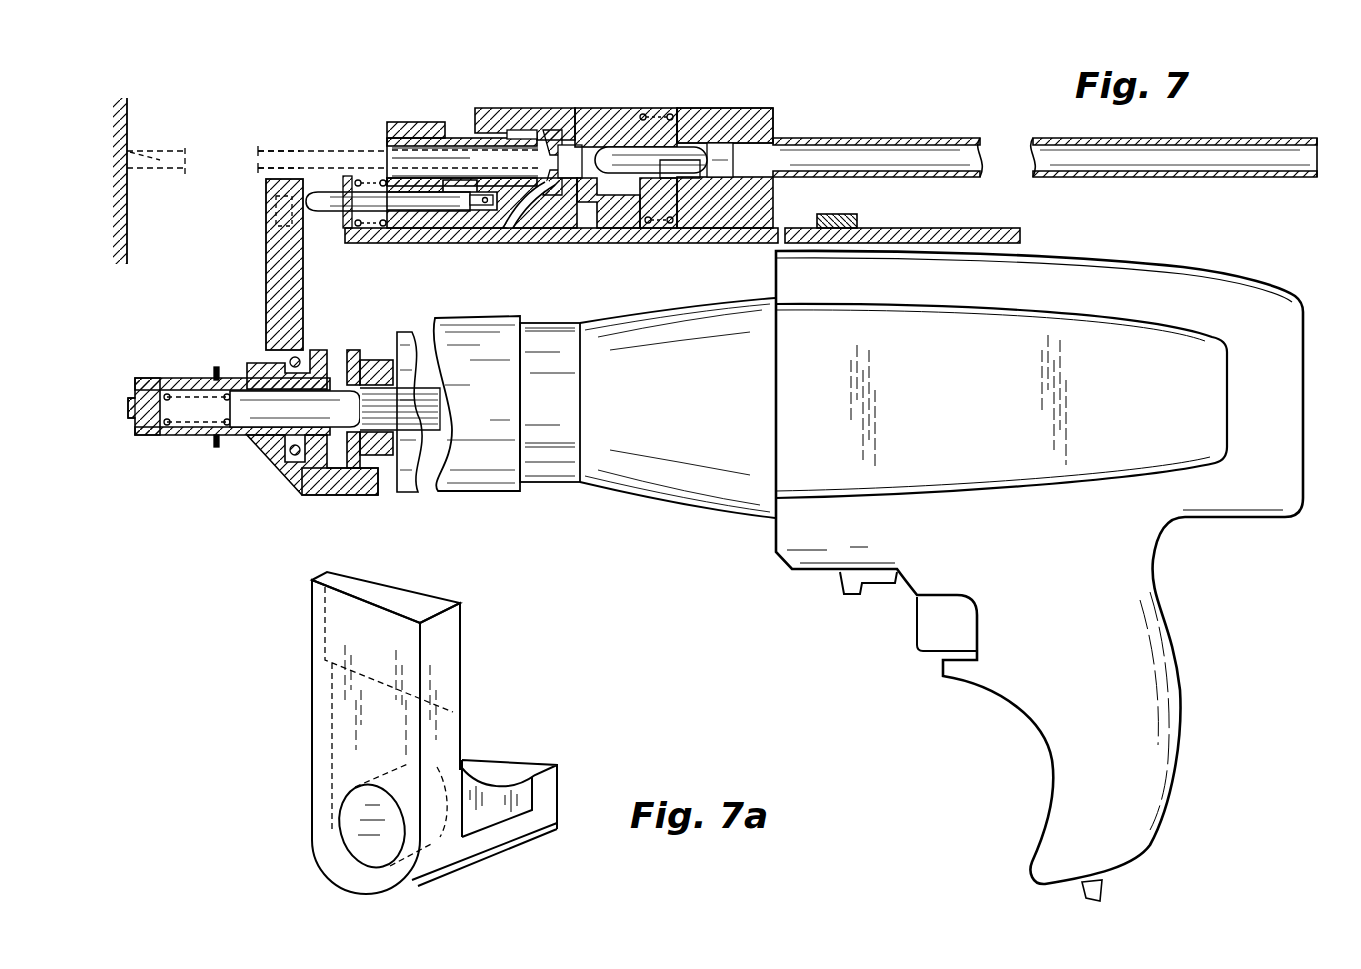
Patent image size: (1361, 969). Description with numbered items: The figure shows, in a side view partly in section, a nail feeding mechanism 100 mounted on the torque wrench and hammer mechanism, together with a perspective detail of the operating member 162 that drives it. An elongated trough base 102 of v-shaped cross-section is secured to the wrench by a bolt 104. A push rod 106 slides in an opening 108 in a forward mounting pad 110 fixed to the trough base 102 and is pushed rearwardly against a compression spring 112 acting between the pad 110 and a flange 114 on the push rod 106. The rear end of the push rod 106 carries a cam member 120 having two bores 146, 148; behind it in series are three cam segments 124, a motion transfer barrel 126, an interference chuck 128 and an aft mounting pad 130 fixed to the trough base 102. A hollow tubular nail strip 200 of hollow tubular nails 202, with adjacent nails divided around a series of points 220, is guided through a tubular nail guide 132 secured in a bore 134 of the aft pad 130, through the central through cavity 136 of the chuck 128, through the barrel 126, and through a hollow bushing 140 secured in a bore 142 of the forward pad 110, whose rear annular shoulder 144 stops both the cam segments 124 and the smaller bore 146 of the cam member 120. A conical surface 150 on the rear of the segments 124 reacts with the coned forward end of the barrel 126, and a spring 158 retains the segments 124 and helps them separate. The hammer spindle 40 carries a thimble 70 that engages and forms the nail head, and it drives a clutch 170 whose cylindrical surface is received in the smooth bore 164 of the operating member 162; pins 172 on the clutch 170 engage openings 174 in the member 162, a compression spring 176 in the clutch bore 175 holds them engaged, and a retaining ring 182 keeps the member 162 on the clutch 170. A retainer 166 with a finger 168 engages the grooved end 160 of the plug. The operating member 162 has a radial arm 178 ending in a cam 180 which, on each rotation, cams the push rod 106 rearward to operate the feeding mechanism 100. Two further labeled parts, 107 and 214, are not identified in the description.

In FIG. 7, the spindle 40 is at (397, 425).
In FIG. 7, the thimble 70 is at (135, 435).
In FIG. 7, the nail feeding mechanism 100 is at (769, 66).
In FIG. 7, the trough base 102 is at (940, 228).
In FIG. 7, the bolt 104 is at (838, 214).
In FIG. 7, the push rod 106 is at (297, 352).
In FIG. 7, the drill housing 107 is at (1120, 258).
In FIG. 7, the opening 108 is at (405, 244).
In FIG. 7, the forward mounting pad 110 is at (418, 138).
In FIG. 7, the compression spring 112 is at (365, 172).
In FIG. 7, the flange 114 is at (342, 215).
In FIG. 7, the cam member 120 is at (491, 390).
In FIG. 7, the cam segments 124 is at (598, 115).
In FIG. 7, the motion transfer barrel 126 is at (672, 112).
In FIG. 7, the interference chuck 128 is at (740, 108).
In FIG. 7, the aft mounting pad 130 is at (735, 150).
In FIG. 7, the tubular nail guide 132 is at (935, 124).
In FIG. 7, the bore 134 is at (745, 160).
In FIG. 7, the central through cavity 136 is at (679, 170).
In FIG. 7, the hollow bushing 140 is at (483, 108).
In FIG. 7, the bore 142 is at (400, 124).
In FIG. 7, the rear annular shoulder 144 is at (557, 170).
In FIG. 7, the bore 146 is at (550, 130).
In FIG. 7, the bore 148 is at (572, 145).
In FIG. 7, the conical surface 150 is at (540, 228).
In FIG. 7, the spring 158 is at (650, 229).
In FIG. 7, the grooved end 160 is at (515, 262).
In FIG. 7, the operating member 162 is at (258, 325).
In FIG. 7A, the operating member 162 is at (432, 833).
In FIG. 7, the smooth bore 164 is at (247, 380).
In FIG. 7A, the smooth bore 164 is at (362, 847).
In FIG. 7, the retainer 166 is at (366, 496).
In FIG. 7A, the retainer 166 is at (497, 840).
In FIG. 7, the finger 168 is at (405, 460).
In FIG. 7A, the finger 168 is at (555, 788).
In FIG. 7, the clutch 170 is at (362, 360).
In FIG. 7, the pins 172 is at (352, 350).
In FIG. 7, the openings 174 is at (291, 358).
In FIG. 7, the bore 175 is at (335, 418).
In FIG. 7, the compression spring 176 is at (165, 430).
In FIG. 7, the arm 178 is at (300, 262).
In FIG. 7A, the arm 178 is at (318, 703).
In FIG. 7, the cam 180 is at (283, 205).
In FIG. 7A, the cam 180 is at (440, 657).
In FIG. 7, the retaining ring 182 is at (215, 367).
In FIG. 7, the hollow tubular nail strip 200 is at (349, 118).
In FIG. 7, the hollow tubular nails 202 is at (278, 147).
In FIG. 7, the fitting 214 is at (177, 147).
In FIG. 7, the points 220 is at (154, 158).